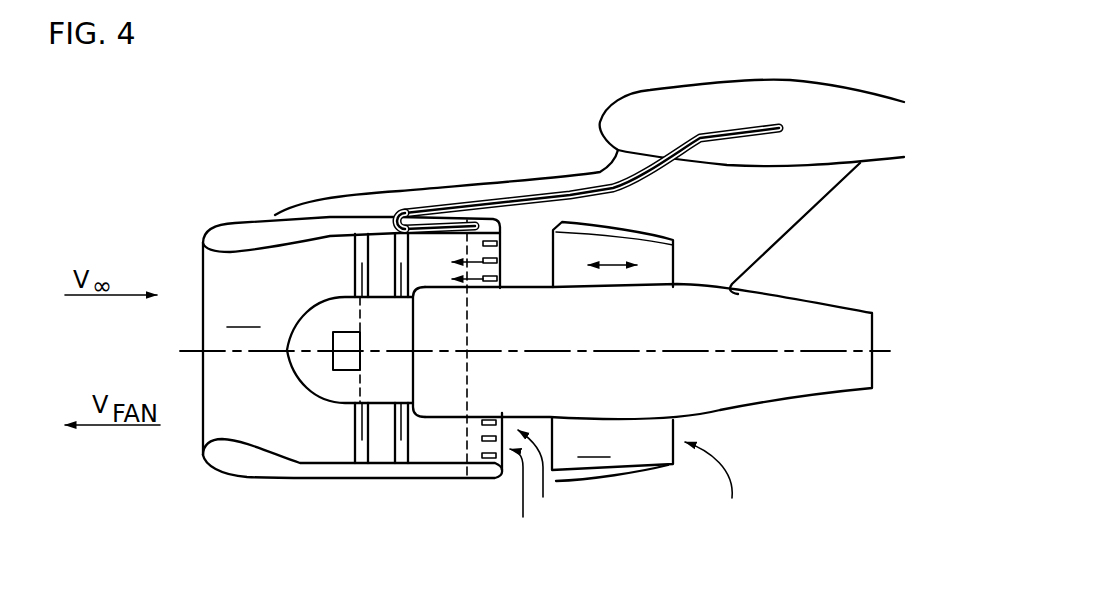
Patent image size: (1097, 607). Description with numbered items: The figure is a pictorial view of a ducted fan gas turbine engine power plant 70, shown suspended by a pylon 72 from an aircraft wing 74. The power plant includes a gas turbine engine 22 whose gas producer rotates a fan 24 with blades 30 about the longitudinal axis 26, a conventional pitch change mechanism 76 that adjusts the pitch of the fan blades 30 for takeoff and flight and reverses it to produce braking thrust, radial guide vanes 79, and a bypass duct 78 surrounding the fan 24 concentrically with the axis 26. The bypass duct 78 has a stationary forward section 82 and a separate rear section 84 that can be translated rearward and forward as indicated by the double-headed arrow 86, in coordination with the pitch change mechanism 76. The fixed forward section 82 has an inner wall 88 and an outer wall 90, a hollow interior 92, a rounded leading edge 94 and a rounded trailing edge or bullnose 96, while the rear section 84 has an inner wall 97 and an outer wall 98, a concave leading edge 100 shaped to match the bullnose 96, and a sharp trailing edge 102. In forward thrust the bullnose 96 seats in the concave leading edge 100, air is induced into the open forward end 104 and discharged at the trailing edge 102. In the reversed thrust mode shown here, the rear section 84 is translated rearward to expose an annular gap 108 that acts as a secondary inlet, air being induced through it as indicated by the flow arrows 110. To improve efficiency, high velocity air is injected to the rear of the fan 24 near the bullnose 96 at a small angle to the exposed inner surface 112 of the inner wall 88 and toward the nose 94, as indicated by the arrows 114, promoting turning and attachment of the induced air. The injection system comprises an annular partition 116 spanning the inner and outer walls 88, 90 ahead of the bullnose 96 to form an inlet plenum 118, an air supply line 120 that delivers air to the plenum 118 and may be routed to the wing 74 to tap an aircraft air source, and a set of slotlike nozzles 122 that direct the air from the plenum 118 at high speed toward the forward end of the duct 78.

The gas turbine engine 22 is at (695, 418).
The fan 24 is at (350, 260).
The longitudinal axis 26 is at (200, 352).
The fan blades 30 is at (353, 422).
The gas turbine engine power plant 70 is at (226, 186).
The pylon 72 is at (476, 182).
The aircraft wing 74 is at (742, 84).
The pitch change mechanism 76 is at (333, 360).
The bypass duct 78 is at (212, 229).
The radial guide vanes 79 is at (413, 432).
The stationary forward section 82 is at (383, 482).
The rear section 84 is at (574, 487).
The double-headed arrow 86 is at (615, 262).
The inner wall 88 is at (310, 480).
The outer wall 90 is at (240, 477).
The hollow interior 92 is at (423, 478).
The rounded leading edge 94 is at (203, 460).
The bullnose 96 is at (502, 480).
The inner wall 97 is at (612, 444).
The outer wall 98 is at (563, 222).
The concave leading edge 100 is at (557, 227).
The sharp trailing edge 102 is at (674, 264).
The open forward end 104 is at (203, 263).
The annular gap 108 is at (533, 257).
The flow arrows 110 is at (527, 512).
The inner surface 112 is at (217, 439).
The arrows 114 is at (497, 268).
The annular partition 116 is at (467, 362).
The inlet plenum 118 is at (470, 432).
The air supply line 120 is at (705, 134).
The slotlike nozzles 122 is at (482, 445).